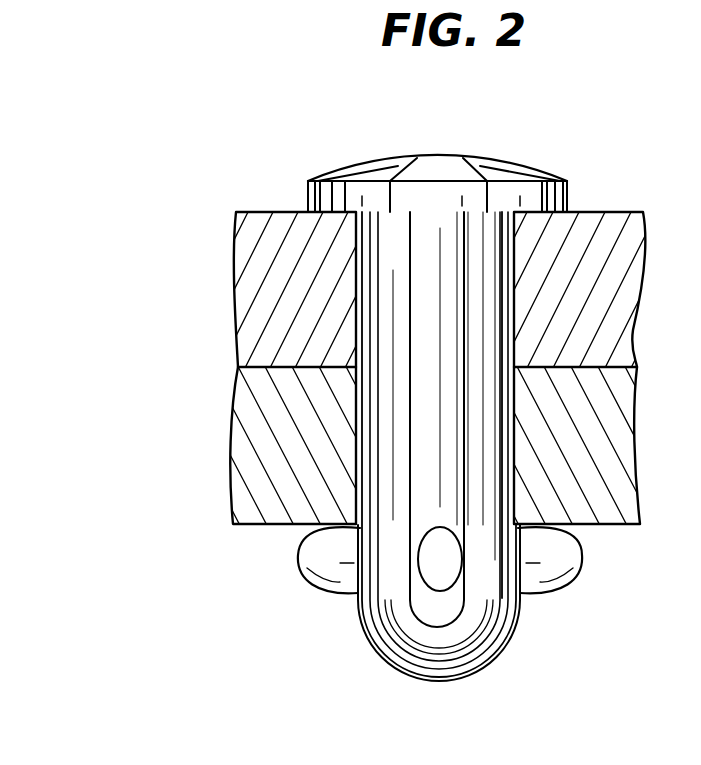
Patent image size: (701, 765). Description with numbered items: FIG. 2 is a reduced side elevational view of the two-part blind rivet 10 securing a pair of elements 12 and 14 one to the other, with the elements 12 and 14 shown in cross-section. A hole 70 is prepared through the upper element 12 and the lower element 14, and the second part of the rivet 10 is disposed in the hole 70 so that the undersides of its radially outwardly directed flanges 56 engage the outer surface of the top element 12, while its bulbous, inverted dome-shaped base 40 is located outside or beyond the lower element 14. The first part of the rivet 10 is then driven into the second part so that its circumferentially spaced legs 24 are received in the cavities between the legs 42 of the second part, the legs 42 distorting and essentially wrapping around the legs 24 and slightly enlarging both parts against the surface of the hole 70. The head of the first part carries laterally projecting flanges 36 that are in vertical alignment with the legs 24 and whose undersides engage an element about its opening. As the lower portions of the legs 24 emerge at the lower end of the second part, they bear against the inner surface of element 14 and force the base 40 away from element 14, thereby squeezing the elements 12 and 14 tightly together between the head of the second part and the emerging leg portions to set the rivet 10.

The two-part blind rivet 10 is at (427, 374).
The element 12 is at (250, 285).
The element 14 is at (245, 455).
The legs 24 is at (447, 435).
The flanges 36 is at (440, 160).
The base 40 is at (478, 637).
The legs 42 is at (510, 325).
The flanges 56 is at (364, 172).
The hole 70 is at (510, 253).